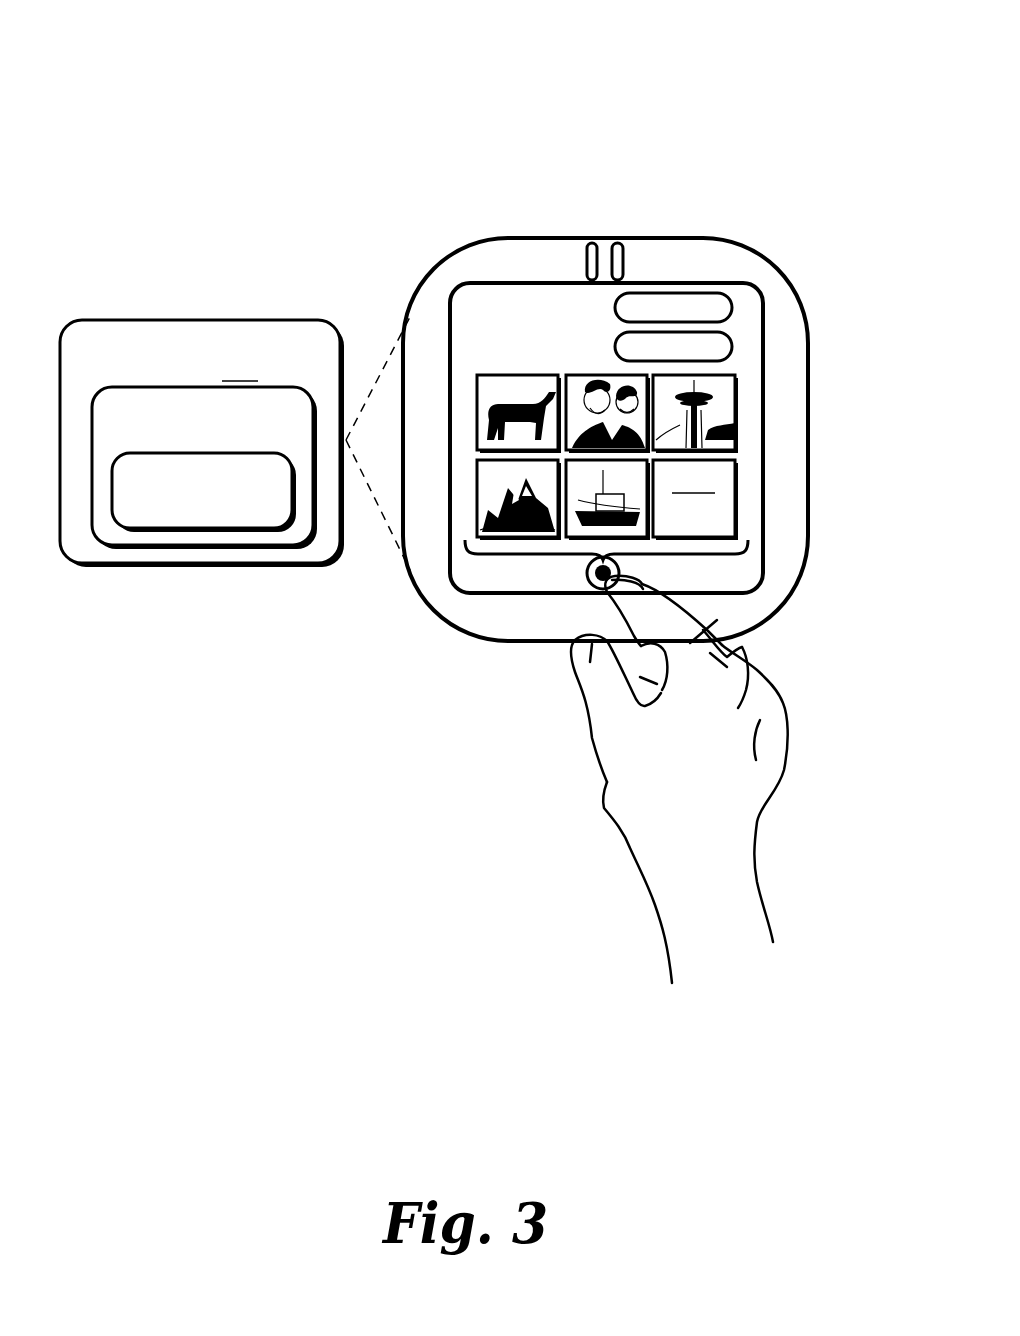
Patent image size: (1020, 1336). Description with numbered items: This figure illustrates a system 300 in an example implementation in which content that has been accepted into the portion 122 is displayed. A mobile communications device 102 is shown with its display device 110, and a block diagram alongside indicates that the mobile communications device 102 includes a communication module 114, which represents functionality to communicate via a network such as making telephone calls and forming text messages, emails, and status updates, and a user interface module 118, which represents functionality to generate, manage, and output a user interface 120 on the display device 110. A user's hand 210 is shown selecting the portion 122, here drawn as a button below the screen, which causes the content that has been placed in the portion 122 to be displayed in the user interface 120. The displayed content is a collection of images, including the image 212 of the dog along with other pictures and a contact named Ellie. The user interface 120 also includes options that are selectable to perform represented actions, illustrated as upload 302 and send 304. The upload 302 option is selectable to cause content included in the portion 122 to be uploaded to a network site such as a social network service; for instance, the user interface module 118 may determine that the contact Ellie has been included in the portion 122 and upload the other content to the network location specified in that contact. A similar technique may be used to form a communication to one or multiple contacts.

The system 300 is at (208, 62).
The mobile communications device 102 is at (434, 420).
The display device 110 is at (632, 282).
The communication module 114 is at (262, 445).
The user interface module 118 is at (262, 515).
The user interface 120 is at (500, 308).
The portion 122 is at (597, 595).
The user's hand 210 is at (708, 627).
The image 212 is at (487, 406).
The upload option 302 is at (733, 306).
The send option 304 is at (733, 344).